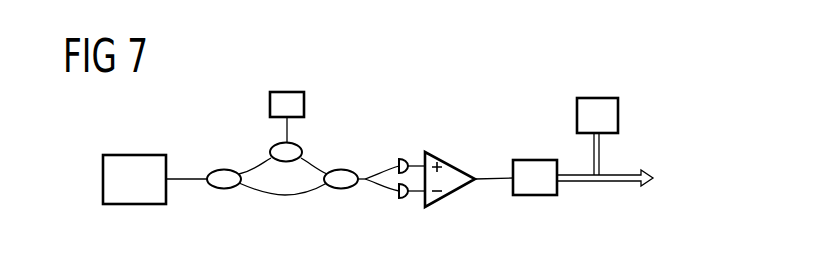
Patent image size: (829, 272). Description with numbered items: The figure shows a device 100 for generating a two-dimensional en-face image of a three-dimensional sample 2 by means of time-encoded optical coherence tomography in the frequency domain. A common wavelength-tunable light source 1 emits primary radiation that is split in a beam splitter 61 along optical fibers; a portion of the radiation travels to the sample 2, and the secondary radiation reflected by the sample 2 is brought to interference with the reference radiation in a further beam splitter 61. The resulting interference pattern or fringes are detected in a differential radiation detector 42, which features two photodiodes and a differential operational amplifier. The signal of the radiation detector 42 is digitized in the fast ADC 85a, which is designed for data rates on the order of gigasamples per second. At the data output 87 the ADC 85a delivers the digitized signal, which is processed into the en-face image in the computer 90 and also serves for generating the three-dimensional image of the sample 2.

The wavelength-tunable light source 1 is at (102, 178).
The sample 2 is at (306, 103).
The radiation detector 42 is at (478, 147).
The beam splitter 61 is at (269, 151).
The fast analog-digital converter 85a is at (534, 197).
The data output 87 is at (622, 183).
The computer 90 is at (620, 116).
The device for generating a two-dimensional en-face image 100 is at (645, 65).